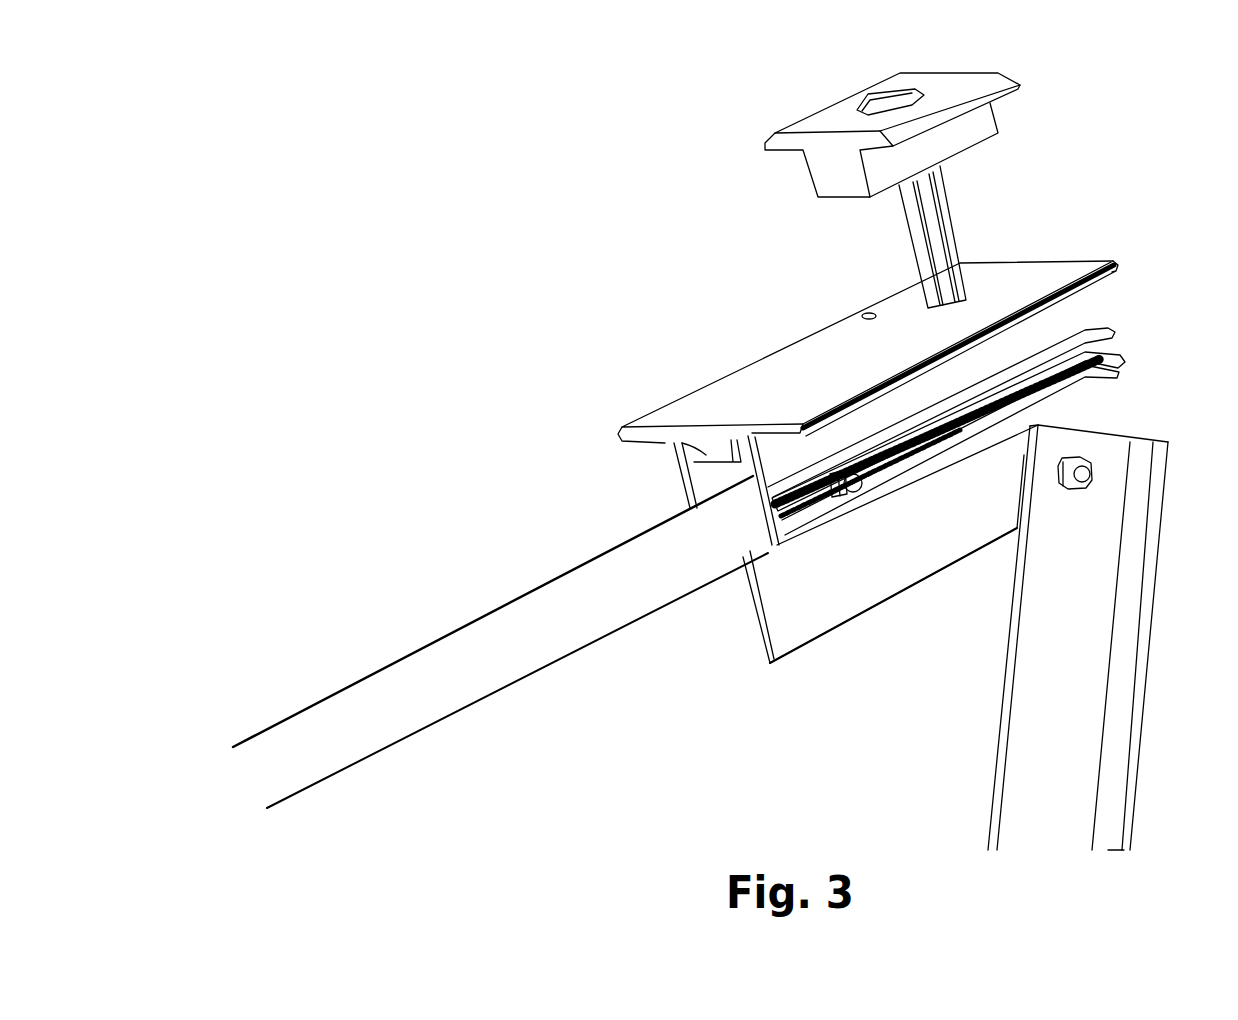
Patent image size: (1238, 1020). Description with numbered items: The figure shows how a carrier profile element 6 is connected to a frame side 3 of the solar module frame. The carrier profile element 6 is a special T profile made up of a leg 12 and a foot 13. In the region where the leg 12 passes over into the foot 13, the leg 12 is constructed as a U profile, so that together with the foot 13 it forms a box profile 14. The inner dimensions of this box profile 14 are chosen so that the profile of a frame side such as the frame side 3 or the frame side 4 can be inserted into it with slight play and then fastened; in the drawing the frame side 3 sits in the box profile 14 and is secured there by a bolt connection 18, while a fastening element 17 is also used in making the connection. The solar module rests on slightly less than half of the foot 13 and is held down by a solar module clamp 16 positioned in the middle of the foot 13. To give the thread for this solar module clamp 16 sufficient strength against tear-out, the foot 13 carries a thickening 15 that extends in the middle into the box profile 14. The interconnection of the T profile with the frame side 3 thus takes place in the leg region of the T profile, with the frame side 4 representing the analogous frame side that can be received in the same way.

The frame side 3 is at (1130, 590).
The frame side 4 is at (460, 645).
The carrier profile element 6 is at (1062, 275).
The leg 12 is at (783, 628).
The foot 13 is at (618, 434).
The box profile 14 is at (698, 487).
The thickening 15 is at (685, 440).
The solar module clamp 16 is at (977, 128).
The fastening element 17 is at (855, 495).
The bolt connection 18 is at (1090, 463).